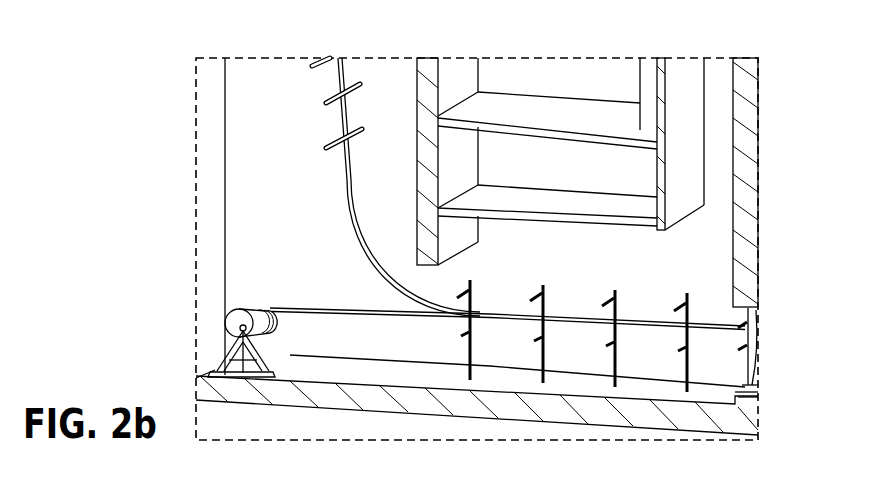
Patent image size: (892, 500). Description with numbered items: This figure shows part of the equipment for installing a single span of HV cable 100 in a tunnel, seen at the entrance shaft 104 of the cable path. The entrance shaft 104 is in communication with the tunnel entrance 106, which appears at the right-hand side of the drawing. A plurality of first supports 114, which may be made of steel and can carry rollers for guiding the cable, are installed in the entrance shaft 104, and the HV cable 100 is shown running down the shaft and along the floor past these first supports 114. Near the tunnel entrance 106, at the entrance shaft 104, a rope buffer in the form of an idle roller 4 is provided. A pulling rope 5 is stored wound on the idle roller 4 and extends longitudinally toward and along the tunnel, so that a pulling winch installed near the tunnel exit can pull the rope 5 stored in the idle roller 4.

The HV cable 100 is at (358, 200).
The entrance shaft 104 is at (280, 189).
The first supports 114 is at (327, 102).
The idle roller 4 is at (227, 323).
The pulling rope 5 is at (277, 307).
The tunnel entrance 106 is at (752, 377).